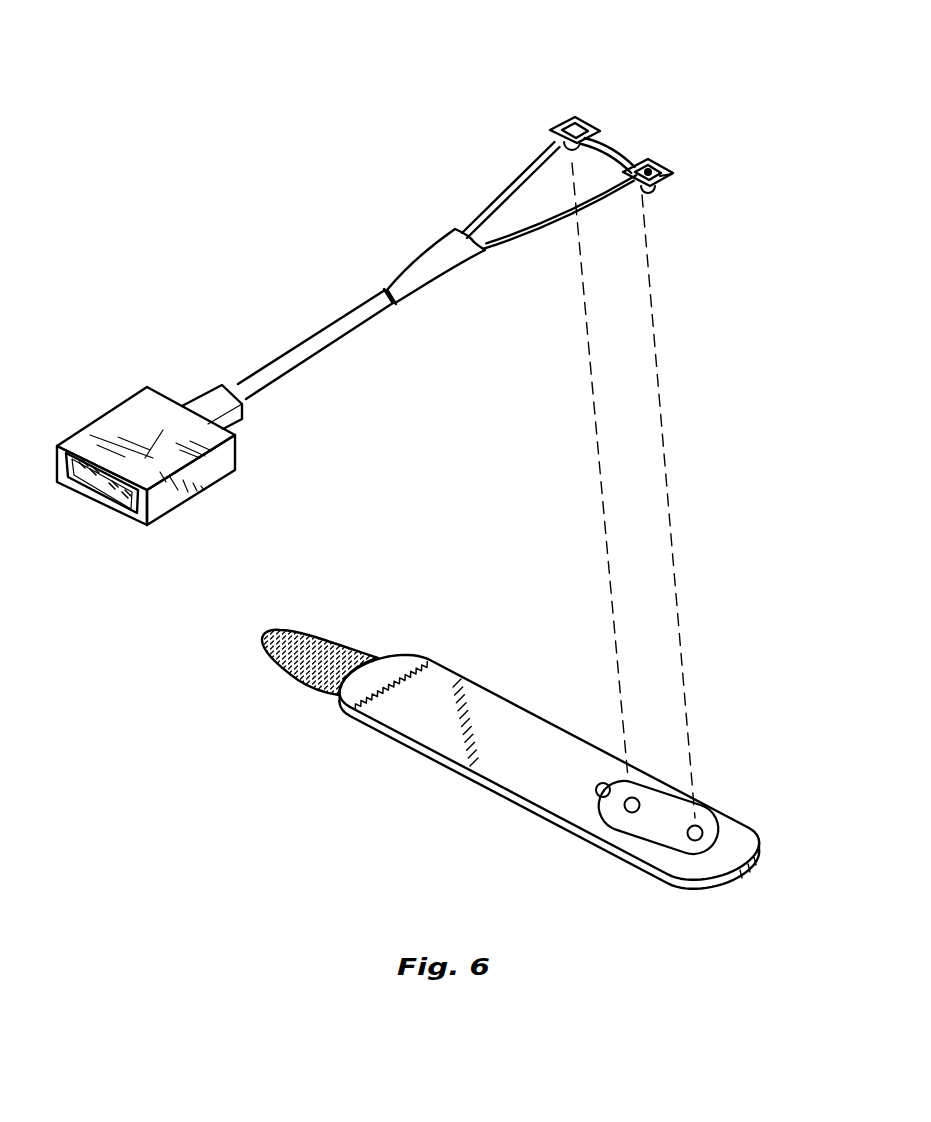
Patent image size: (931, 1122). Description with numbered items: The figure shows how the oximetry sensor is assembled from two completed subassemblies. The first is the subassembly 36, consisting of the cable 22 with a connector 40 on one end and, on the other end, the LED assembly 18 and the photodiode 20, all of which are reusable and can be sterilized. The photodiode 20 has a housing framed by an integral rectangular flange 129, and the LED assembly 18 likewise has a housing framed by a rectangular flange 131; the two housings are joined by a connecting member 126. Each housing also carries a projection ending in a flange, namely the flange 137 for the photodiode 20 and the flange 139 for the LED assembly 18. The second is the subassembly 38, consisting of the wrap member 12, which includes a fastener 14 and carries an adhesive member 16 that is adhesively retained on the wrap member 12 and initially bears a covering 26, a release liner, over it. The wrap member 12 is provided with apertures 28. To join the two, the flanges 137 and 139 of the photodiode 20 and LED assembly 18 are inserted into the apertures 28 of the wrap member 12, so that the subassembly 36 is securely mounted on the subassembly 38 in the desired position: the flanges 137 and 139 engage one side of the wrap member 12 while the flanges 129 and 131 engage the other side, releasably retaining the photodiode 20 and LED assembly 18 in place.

The wrap member 12 is at (503, 723).
The fastener 14 is at (335, 645).
The adhesive member 16 is at (727, 837).
The LED assembly 18 is at (672, 162).
The photodiode 20 is at (573, 117).
The cable 22 is at (363, 327).
The cover 26 is at (662, 807).
The apertures 28 is at (632, 798).
The subassembly 36 is at (352, 244).
The subassembly 38 is at (378, 775).
The connector 40 is at (208, 473).
The connecting member 126 is at (627, 150).
The rectangular flange 129 is at (553, 122).
The rectangular flange 131 is at (666, 179).
The flange 137 is at (610, 140).
The flange 139 is at (648, 193).